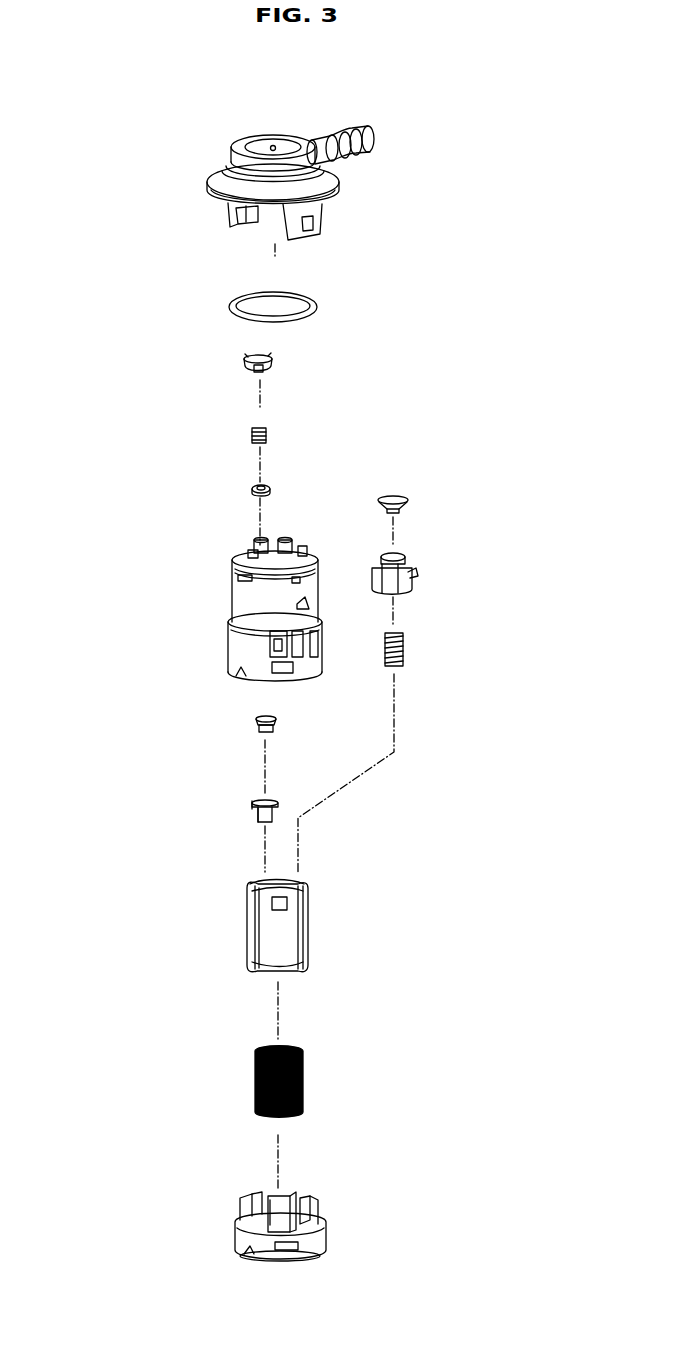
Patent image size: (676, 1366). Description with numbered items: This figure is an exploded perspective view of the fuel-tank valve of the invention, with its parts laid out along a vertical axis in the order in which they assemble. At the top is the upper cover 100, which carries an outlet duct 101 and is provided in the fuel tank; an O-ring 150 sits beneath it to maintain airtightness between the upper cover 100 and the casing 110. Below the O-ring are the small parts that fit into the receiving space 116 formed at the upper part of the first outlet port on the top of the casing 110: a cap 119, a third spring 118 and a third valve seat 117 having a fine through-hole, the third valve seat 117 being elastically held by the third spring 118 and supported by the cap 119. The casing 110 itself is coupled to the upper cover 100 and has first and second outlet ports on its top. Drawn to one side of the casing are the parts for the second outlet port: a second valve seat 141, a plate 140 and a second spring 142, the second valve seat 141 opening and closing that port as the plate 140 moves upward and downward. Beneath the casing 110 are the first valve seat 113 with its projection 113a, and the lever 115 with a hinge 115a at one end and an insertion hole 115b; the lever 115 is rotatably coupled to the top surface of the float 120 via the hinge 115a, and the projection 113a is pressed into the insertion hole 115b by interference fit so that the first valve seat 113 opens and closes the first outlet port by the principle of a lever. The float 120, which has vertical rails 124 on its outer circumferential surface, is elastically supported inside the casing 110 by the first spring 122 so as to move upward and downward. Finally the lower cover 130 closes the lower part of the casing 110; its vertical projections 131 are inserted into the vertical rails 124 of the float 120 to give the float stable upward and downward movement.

The upper cover 100 is at (211, 180).
The outlet duct 101 is at (339, 131).
The O-ring 150 is at (318, 306).
The cap 119 is at (249, 360).
The third spring 118 is at (267, 432).
The third valve seat 117 is at (252, 489).
The receiving space 116 is at (256, 550).
The casing 110 is at (246, 603).
The second valve seat 141 is at (397, 497).
The plate 140 is at (412, 570).
The second spring 142 is at (405, 660).
The first valve seat 113 is at (261, 718).
The projection 113a is at (259, 728).
The lever 115 is at (267, 800).
The hinge 115a is at (256, 810).
The insertion hole 115b is at (258, 801).
The float 120 is at (304, 933).
The vertical rail 124 is at (257, 938).
The first spring 122 is at (303, 1072).
The vertical projection 131 is at (268, 1198).
The lower cover 130 is at (313, 1238).